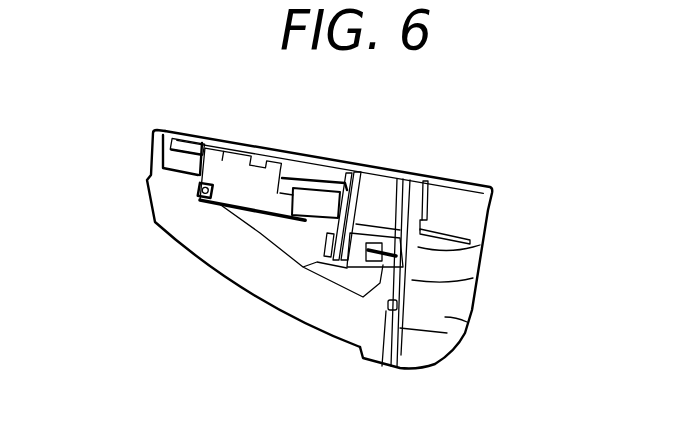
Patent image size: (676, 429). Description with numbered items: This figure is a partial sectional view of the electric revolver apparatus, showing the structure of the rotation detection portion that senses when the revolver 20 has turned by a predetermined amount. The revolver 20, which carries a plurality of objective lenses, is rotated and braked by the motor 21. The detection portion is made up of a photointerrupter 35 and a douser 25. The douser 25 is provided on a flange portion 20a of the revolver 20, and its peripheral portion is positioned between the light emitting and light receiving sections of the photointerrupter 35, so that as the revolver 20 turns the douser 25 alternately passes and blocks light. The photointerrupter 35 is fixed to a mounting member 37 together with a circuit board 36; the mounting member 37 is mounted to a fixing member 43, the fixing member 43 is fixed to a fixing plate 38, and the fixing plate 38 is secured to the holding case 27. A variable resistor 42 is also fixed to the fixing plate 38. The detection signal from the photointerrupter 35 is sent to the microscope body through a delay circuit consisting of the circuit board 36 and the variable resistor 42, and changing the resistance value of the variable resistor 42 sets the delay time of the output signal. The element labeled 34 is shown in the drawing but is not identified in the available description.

The revolver 20 is at (222, 260).
The flange portion 20a is at (473, 278).
The motor 21 is at (469, 322).
The douser 25 is at (480, 245).
The holding case 27 is at (400, 328).
The end bracket 34 is at (183, 175).
The photointerrupter 35 is at (377, 217).
The circuit board 36 is at (317, 262).
The mounting member 37 is at (340, 190).
The fixing plate 38 is at (217, 205).
The variable resistor 42 is at (308, 200).
The fixing member 43 is at (222, 150).